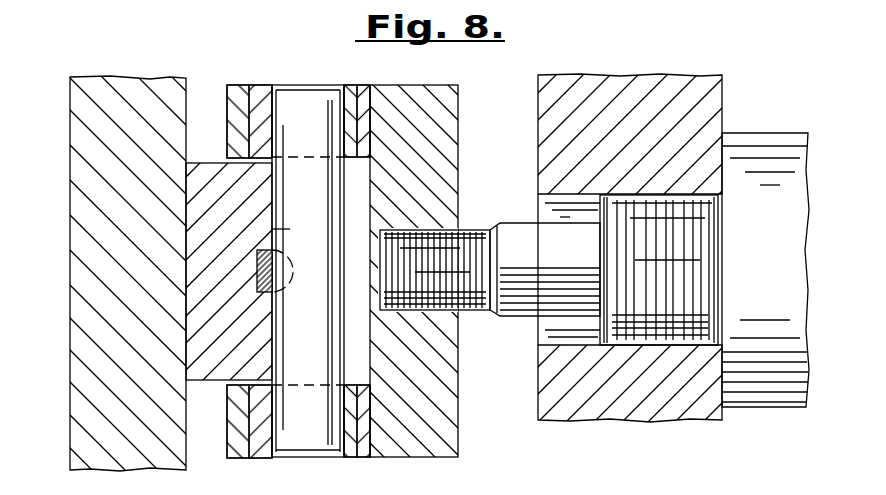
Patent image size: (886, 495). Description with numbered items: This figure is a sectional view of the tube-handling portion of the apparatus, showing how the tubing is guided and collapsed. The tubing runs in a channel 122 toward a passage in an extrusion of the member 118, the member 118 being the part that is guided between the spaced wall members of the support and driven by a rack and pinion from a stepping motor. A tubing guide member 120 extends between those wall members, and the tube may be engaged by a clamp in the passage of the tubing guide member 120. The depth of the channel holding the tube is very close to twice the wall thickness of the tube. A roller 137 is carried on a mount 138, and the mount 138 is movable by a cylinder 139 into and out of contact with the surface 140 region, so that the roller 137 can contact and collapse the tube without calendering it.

The member 118 is at (620, 92).
The tubing guide member 120 is at (86, 313).
The channel 122 is at (257, 266).
The roller 137 is at (303, 120).
The mount 138 is at (388, 108).
The cylinder 139 is at (770, 150).
The groove 140 is at (290, 229).